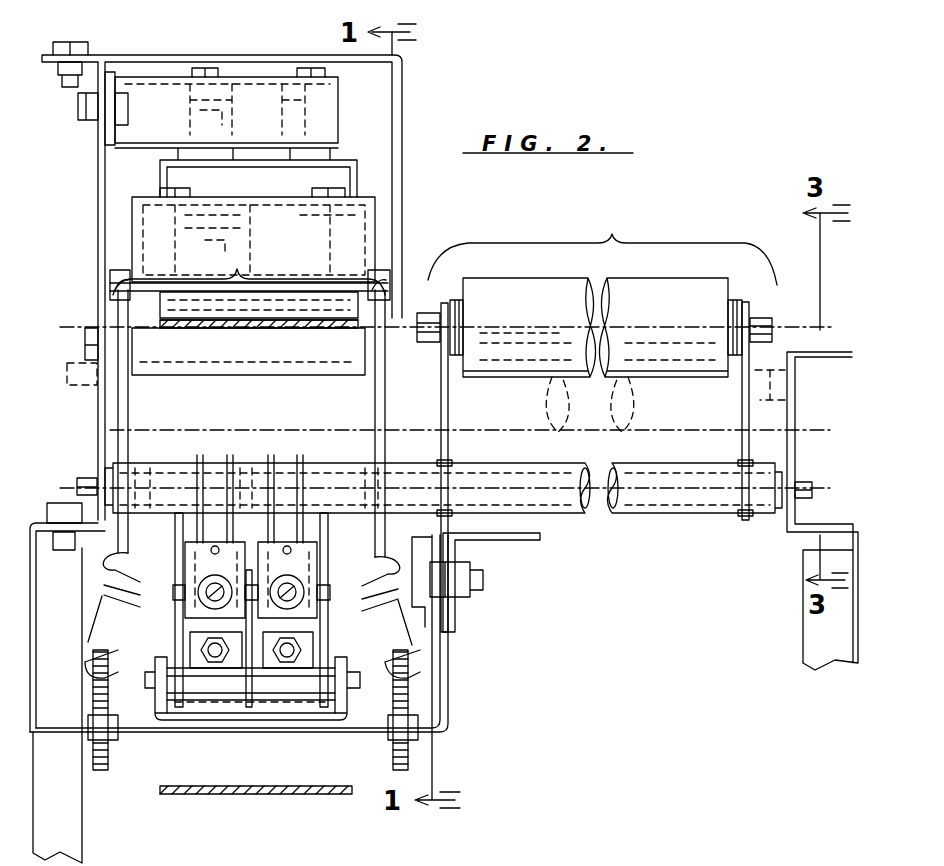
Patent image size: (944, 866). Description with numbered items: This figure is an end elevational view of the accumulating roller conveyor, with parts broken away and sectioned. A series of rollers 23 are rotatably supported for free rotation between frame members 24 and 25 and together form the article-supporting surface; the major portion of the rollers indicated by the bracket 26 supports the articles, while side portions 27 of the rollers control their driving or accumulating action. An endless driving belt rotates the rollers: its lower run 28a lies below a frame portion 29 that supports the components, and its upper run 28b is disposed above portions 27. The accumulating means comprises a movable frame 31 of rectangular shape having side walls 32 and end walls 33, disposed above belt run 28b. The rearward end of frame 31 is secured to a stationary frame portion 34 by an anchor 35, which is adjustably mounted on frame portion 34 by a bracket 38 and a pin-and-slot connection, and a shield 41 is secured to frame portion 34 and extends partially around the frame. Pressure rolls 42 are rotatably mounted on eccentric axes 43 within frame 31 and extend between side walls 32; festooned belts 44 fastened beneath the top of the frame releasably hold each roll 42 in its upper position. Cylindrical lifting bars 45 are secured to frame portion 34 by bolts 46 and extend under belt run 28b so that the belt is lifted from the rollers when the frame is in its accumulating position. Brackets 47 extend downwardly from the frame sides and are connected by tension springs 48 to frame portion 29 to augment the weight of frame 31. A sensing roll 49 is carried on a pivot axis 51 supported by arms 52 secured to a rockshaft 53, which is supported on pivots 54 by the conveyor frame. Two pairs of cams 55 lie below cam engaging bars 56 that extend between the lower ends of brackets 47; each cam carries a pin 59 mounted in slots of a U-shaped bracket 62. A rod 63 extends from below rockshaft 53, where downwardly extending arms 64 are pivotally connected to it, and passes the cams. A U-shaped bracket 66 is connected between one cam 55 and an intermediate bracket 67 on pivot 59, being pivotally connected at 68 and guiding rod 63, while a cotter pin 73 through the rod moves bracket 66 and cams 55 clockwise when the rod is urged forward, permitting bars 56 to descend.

The rollers 23 is at (655, 425).
The frame member 24 is at (98, 420).
The frame member 25 is at (795, 452).
The bracket 26 is at (602, 243).
The side portions 27 is at (249, 269).
The lower run 28a is at (250, 797).
The upper run 28b is at (205, 328).
The frame portion 29 is at (145, 730).
The movable frame 31 is at (378, 191).
The side walls 32 is at (132, 229).
The end walls 33 is at (328, 266).
The stationary frame portion 34 is at (100, 117).
The anchor 35 is at (144, 90).
The bracket 38 is at (108, 135).
The shield 41 is at (246, 58).
The pressure rolls 42 is at (322, 308).
The eccentric axes 43 is at (390, 285).
The festooned belts 44 is at (246, 190).
The lifting bars 45 is at (286, 362).
The bolts 46 is at (85, 343).
The brackets 47 is at (124, 443).
The tension springs 48 is at (100, 584).
The sensing roll 49 is at (655, 278).
The pivot axis 51 is at (774, 328).
The arms 52 is at (445, 383).
The rockshaft 53 is at (692, 513).
The pivots 54 is at (77, 487).
The cams 55 is at (180, 525).
The cam engaging bars 56 is at (326, 462).
The pin 59 is at (283, 690).
The U-shaped bracket 62 is at (322, 718).
The rod 63 is at (212, 598).
The arms 64 is at (232, 504).
The U-shaped bracket 66 is at (290, 560).
The intermediate bracket 67 is at (190, 630).
The pivotal connection 68 is at (368, 570).
The cotter pin 73 is at (218, 585).